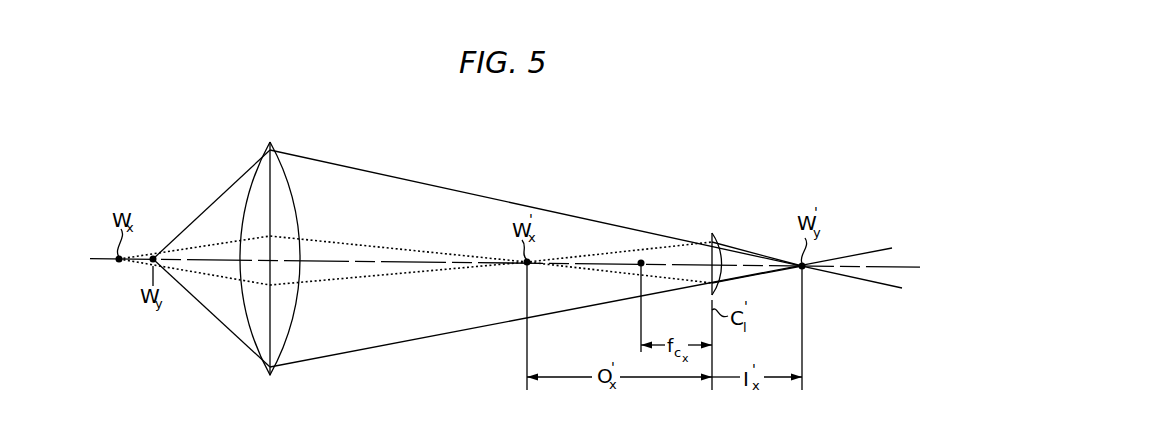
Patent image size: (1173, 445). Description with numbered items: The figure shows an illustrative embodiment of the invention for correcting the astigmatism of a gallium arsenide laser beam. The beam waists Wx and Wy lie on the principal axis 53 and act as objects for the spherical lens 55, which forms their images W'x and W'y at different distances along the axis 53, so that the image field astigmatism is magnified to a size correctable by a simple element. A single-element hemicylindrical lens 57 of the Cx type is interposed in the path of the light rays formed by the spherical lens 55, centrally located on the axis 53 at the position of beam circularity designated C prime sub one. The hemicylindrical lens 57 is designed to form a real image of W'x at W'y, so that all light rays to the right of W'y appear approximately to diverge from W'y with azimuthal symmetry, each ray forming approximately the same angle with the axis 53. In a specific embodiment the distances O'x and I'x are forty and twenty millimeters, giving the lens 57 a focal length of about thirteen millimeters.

The principal axis 53 is at (897, 266).
The spherical lens 55 is at (291, 213).
The hemicylindrical lens 57 is at (714, 244).